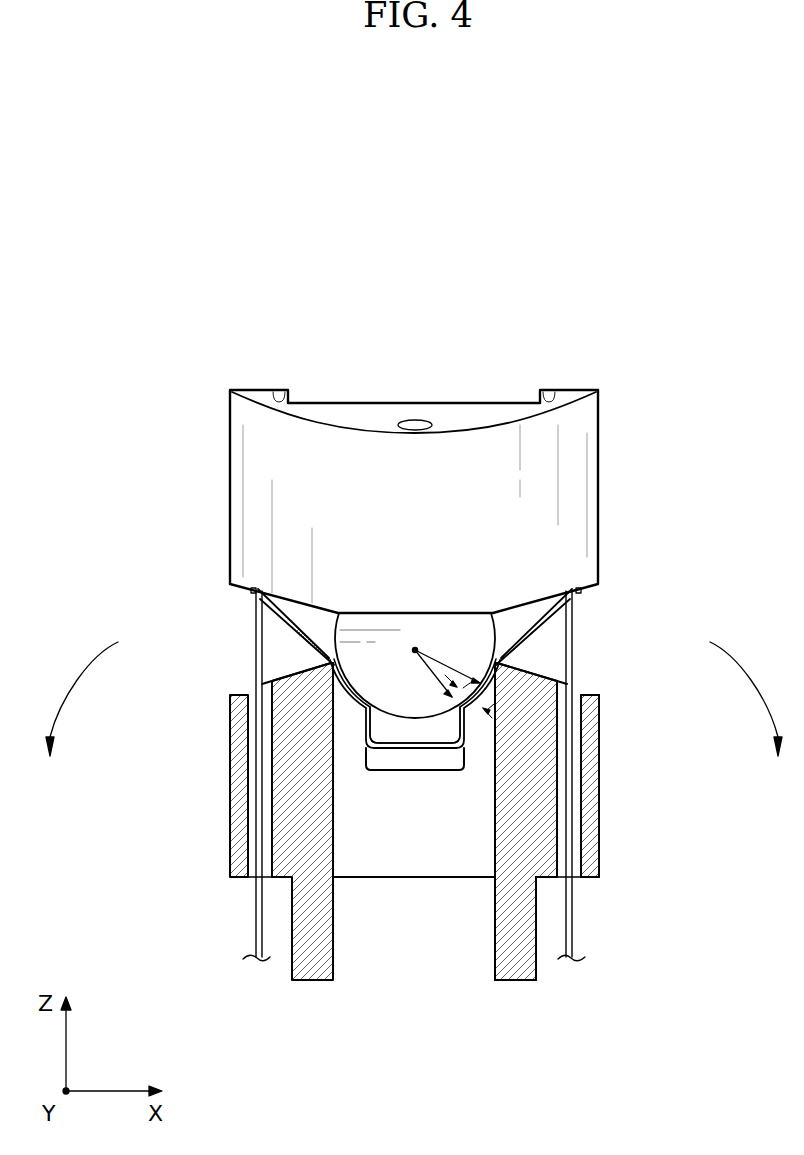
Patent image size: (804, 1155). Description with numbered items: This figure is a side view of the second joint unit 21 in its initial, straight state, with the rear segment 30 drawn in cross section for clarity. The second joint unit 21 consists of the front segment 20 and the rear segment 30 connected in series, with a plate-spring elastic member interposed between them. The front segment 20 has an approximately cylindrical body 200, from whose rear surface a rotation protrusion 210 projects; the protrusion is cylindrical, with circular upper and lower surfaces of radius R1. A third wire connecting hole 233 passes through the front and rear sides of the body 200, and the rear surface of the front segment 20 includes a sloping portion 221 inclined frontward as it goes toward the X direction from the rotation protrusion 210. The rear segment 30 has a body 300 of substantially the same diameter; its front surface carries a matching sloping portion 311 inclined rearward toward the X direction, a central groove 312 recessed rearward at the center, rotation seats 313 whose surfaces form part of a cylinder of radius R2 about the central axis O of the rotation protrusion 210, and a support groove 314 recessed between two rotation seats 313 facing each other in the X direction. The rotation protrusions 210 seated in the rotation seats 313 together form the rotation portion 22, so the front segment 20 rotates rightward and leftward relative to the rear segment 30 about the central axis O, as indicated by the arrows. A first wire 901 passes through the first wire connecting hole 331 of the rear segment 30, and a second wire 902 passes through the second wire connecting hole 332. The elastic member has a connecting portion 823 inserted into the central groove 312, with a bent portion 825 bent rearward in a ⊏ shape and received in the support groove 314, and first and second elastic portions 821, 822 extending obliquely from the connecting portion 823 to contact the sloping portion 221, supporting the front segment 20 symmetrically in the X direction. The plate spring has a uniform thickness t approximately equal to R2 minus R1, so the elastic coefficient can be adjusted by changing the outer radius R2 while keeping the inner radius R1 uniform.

The front segment 20 is at (600, 443).
The body 200 is at (600, 488).
The rotation protrusion 210 is at (443, 630).
The third wire connecting hole 233 is at (420, 423).
The second joint unit 21 is at (168, 457).
The rotation portion 22 is at (520, 650).
The sloping portion 221 is at (246, 584).
The first elastic portion 821 is at (275, 614).
The second elastic portion 822 is at (545, 621).
The connecting portion 823 is at (331, 691).
The bent portion 825 is at (431, 771).
The sloping portion 311 is at (247, 695).
The rotation seat 313 is at (337, 707).
The support groove 314 is at (397, 771).
The central groove 312 is at (355, 840).
The rear segment 30 is at (600, 735).
The body 300 is at (599, 840).
The first wire connecting hole 331 is at (248, 848).
The second wire connecting hole 332 is at (585, 778).
The first wire 901 is at (257, 926).
The second wire 902 is at (573, 926).
The central axis O is at (415, 648).
The radius R1 is at (433, 673).
The radius R2 is at (447, 665).
The thickness t is at (477, 717).